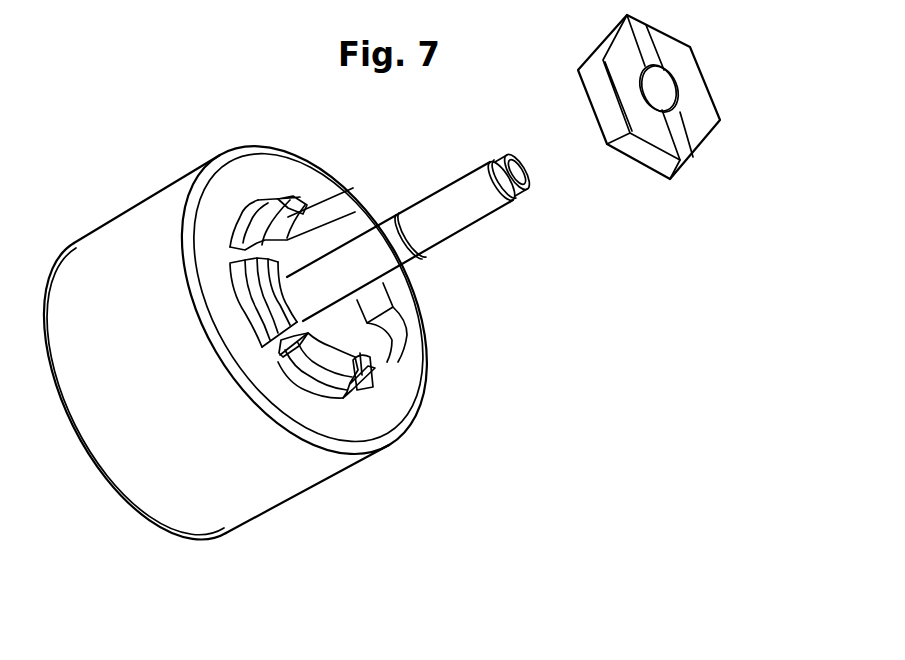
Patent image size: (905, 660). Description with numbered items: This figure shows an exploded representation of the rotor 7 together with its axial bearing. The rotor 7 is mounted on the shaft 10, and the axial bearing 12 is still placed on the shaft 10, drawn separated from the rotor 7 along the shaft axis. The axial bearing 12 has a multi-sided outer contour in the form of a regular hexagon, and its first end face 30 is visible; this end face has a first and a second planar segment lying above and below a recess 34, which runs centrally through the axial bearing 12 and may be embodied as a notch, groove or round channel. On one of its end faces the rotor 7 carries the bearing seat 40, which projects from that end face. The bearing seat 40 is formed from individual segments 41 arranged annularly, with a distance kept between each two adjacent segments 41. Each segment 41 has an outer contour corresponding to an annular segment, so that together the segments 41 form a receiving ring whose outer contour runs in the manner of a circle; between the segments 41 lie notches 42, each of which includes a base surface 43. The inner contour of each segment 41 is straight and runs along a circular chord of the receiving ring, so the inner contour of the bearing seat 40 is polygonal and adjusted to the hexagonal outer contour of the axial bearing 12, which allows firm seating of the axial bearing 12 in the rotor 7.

The rotor 7 is at (349, 479).
The shaft 10 is at (390, 228).
The axial bearing 12 is at (689, 108).
The first end face 30 is at (692, 101).
The recess 34 is at (678, 152).
The bearing seat 40 is at (357, 320).
The segments 41 is at (347, 336).
The notches 42 is at (418, 335).
The base surface 43 is at (402, 345).